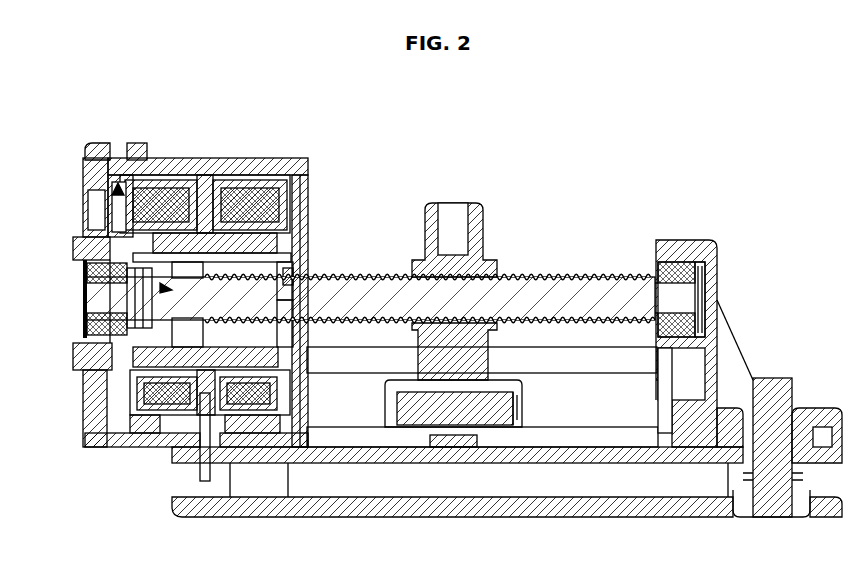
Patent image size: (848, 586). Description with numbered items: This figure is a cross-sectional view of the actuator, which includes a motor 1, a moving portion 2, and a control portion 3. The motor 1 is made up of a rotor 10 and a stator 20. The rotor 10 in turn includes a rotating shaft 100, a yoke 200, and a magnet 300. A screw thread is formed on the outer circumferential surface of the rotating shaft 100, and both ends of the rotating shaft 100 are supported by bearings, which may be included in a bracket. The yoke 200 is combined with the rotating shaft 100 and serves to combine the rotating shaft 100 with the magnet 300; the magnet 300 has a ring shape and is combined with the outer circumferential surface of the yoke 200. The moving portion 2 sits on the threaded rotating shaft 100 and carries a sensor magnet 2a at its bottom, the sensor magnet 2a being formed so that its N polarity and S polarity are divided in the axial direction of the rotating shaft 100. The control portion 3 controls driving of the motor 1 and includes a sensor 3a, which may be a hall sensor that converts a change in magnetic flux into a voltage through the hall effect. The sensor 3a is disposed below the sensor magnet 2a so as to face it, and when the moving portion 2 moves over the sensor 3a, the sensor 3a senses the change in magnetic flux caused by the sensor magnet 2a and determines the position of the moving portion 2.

The motor 1 is at (171, 164).
The magnet 300 is at (240, 231).
The stator 20 is at (108, 187).
The rotor 10 is at (85, 285).
The yoke 200 is at (300, 250).
The rotating shaft 100 is at (562, 300).
The moving portion 2 is at (478, 205).
The sensor magnet 2a is at (419, 410).
The sensor 3a is at (459, 448).
The control portion 3 is at (554, 463).